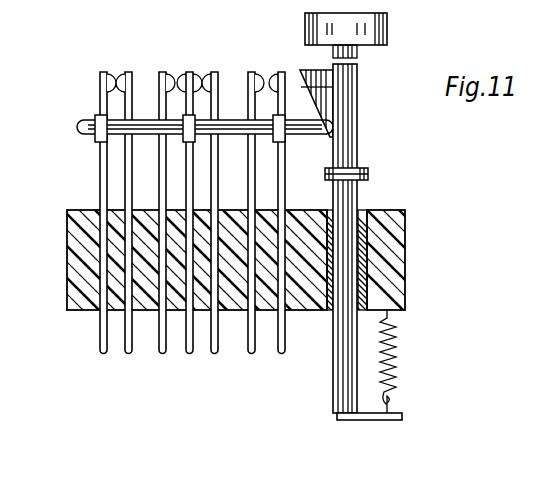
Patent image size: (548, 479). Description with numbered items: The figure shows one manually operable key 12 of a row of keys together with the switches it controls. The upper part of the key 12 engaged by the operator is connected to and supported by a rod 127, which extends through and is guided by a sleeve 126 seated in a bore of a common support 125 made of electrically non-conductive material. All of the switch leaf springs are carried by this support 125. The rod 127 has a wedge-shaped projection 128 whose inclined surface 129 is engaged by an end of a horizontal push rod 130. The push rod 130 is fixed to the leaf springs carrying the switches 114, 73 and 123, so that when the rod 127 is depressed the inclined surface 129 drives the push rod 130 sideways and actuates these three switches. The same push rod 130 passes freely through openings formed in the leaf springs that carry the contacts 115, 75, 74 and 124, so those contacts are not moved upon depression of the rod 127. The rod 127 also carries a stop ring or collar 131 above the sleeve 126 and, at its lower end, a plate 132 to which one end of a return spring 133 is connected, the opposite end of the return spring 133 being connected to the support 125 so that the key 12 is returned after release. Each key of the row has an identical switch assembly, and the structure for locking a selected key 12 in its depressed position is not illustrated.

The key 12 is at (387, 29).
The switch 73 is at (185, 73).
The contact 74 is at (214, 73).
The contact 75 is at (153, 73).
The switch 114 is at (100, 90).
The contact 115 is at (120, 74).
The switch 123 is at (279, 73).
The contact 124 is at (242, 73).
The support 125 is at (85, 213).
The sleeve 126 is at (364, 212).
The rod 127 is at (352, 128).
The wedge-shaped projection 128 is at (327, 100).
The inclined surface 129 is at (333, 87).
The push rod 130 is at (77, 126).
The stop ring or collar 131 is at (368, 174).
The plate 132 is at (360, 421).
The return spring 133 is at (394, 354).